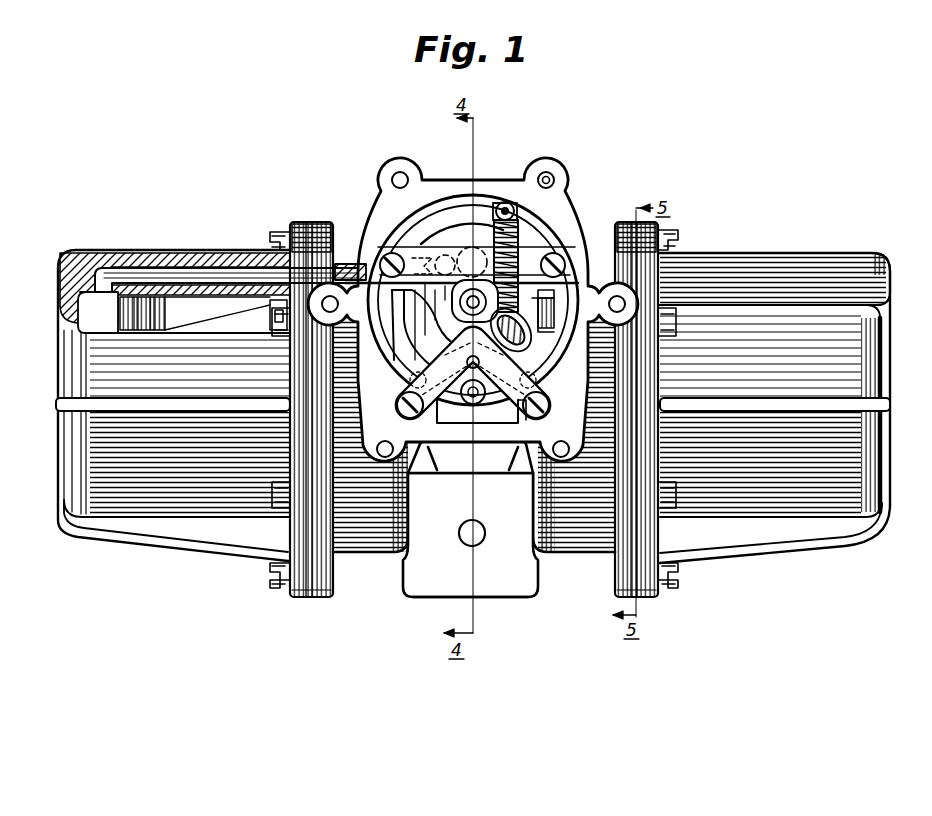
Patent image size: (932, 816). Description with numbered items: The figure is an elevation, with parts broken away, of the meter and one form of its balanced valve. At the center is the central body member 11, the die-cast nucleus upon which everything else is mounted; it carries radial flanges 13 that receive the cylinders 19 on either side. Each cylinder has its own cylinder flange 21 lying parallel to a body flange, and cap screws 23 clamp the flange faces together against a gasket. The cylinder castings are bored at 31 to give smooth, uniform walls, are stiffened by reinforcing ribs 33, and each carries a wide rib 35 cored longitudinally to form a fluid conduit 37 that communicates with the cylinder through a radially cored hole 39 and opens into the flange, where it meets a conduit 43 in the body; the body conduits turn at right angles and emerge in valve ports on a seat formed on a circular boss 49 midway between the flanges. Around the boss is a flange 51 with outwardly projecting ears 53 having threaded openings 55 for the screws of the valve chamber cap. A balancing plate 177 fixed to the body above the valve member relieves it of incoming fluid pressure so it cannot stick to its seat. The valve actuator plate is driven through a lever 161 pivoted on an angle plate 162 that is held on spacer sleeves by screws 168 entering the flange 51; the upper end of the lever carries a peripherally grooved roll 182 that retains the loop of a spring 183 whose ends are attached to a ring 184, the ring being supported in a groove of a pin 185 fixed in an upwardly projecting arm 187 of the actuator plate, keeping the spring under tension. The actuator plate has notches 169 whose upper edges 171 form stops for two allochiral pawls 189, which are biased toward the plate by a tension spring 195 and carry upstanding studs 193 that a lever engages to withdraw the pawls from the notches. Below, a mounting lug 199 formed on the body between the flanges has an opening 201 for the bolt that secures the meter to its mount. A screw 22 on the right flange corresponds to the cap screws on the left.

The central body member 11 is at (557, 556).
The radial flanges 13 is at (328, 220).
The cylinders 19 is at (58, 482).
The cylinder flanges 21 is at (296, 597).
The bolt 22 is at (652, 597).
The cap screws 23 is at (280, 232).
The cylinder bore 31 is at (184, 312).
The reinforcing ribs 33 is at (163, 545).
The rib 35 is at (838, 258).
The fluid conduit 37 is at (186, 258).
The radially cored hole 39 is at (97, 257).
The body conduits 43 is at (342, 262).
The circular boss 49 is at (425, 232).
The flange 51 is at (566, 222).
The ears 53 is at (556, 186).
The threaded openings 55 is at (551, 178).
The lever 161 is at (490, 333).
The angle plate 162 is at (477, 420).
The screws 168 is at (540, 420).
The notches 169 is at (549, 310).
The upper edges 171 is at (550, 295).
The balancing plate 177 is at (526, 262).
The peripherally grooved roll 182 is at (532, 334).
The spring 183 is at (516, 255).
The ring 184 is at (500, 205).
The pin 185 is at (506, 217).
The upwardly projecting arm 187 is at (497, 200).
The allochiral pawls 189 is at (405, 336).
The upstanding studs 193 is at (408, 385).
The tension spring 195 is at (473, 373).
The mounting lug 199 is at (504, 594).
The opening 201 is at (483, 540).